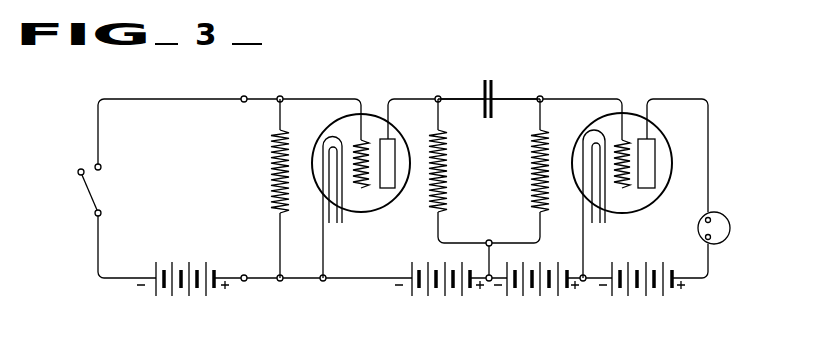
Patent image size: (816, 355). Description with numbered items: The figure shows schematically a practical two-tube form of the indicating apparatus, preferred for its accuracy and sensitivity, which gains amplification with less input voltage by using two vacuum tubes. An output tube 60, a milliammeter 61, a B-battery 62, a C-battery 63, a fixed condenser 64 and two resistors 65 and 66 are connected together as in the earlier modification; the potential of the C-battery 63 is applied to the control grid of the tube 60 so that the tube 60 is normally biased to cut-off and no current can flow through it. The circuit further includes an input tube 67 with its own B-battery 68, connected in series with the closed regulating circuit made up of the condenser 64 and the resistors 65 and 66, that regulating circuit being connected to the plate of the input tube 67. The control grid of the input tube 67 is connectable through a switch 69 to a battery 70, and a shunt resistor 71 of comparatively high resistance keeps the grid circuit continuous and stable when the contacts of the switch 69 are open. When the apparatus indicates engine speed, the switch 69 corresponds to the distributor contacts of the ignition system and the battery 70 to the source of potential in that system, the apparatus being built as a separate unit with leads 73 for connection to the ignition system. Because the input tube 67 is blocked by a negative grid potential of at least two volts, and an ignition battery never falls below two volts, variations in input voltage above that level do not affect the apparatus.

The tube 60 is at (641, 203).
The milliammeter 61 is at (731, 228).
The B-battery 62 is at (640, 292).
The C-battery 63 is at (538, 291).
The fixed condenser 64 is at (490, 76).
The resistor 65 is at (448, 205).
The resistor 66 is at (532, 170).
The input tube 67 is at (372, 206).
The B-battery 68 is at (425, 291).
The switch 69 is at (87, 187).
The battery 70 is at (183, 256).
The shunt resistor 71 is at (271, 192).
The leads 73 is at (243, 102).